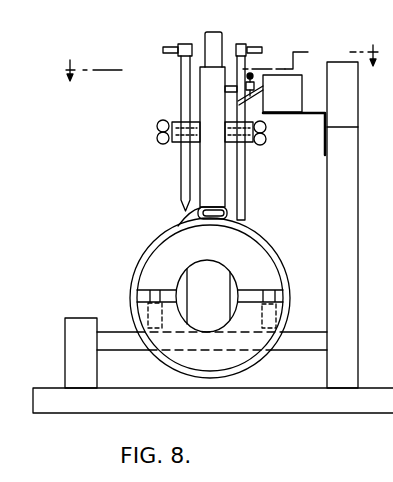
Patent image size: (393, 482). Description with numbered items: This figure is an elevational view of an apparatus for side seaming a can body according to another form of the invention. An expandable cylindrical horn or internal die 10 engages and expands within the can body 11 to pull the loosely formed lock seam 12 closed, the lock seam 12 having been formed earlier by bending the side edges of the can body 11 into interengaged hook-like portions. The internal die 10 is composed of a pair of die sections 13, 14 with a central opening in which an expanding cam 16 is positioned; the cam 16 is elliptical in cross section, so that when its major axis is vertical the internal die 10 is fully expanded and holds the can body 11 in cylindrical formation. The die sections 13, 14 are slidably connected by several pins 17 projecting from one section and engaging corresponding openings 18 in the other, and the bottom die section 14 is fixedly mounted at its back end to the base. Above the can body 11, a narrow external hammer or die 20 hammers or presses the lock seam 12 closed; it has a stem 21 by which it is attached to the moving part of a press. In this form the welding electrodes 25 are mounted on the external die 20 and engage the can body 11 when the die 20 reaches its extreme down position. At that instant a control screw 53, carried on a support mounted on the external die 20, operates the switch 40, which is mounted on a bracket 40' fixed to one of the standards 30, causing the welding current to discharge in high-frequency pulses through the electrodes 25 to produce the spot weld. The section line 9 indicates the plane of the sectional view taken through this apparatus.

The section line 9- 9 is at (222, 74).
The expandable cylindrical horn or internal die 10 is at (209, 298).
The can body 11 is at (272, 247).
The lock seam 12 is at (243, 213).
The die section 13 is at (162, 253).
The die section 14 is at (243, 358).
The expanding cam 16 is at (227, 283).
The pins 17 is at (148, 292).
The openings 18 is at (140, 312).
The external hammer or die 20 is at (203, 93).
The stem 21 is at (213, 45).
The welding electrodes 25 is at (182, 177).
The standard 30 is at (352, 213).
The switch 40 is at (294, 115).
The bracket 40' is at (354, 129).
The control screw 53 is at (250, 67).